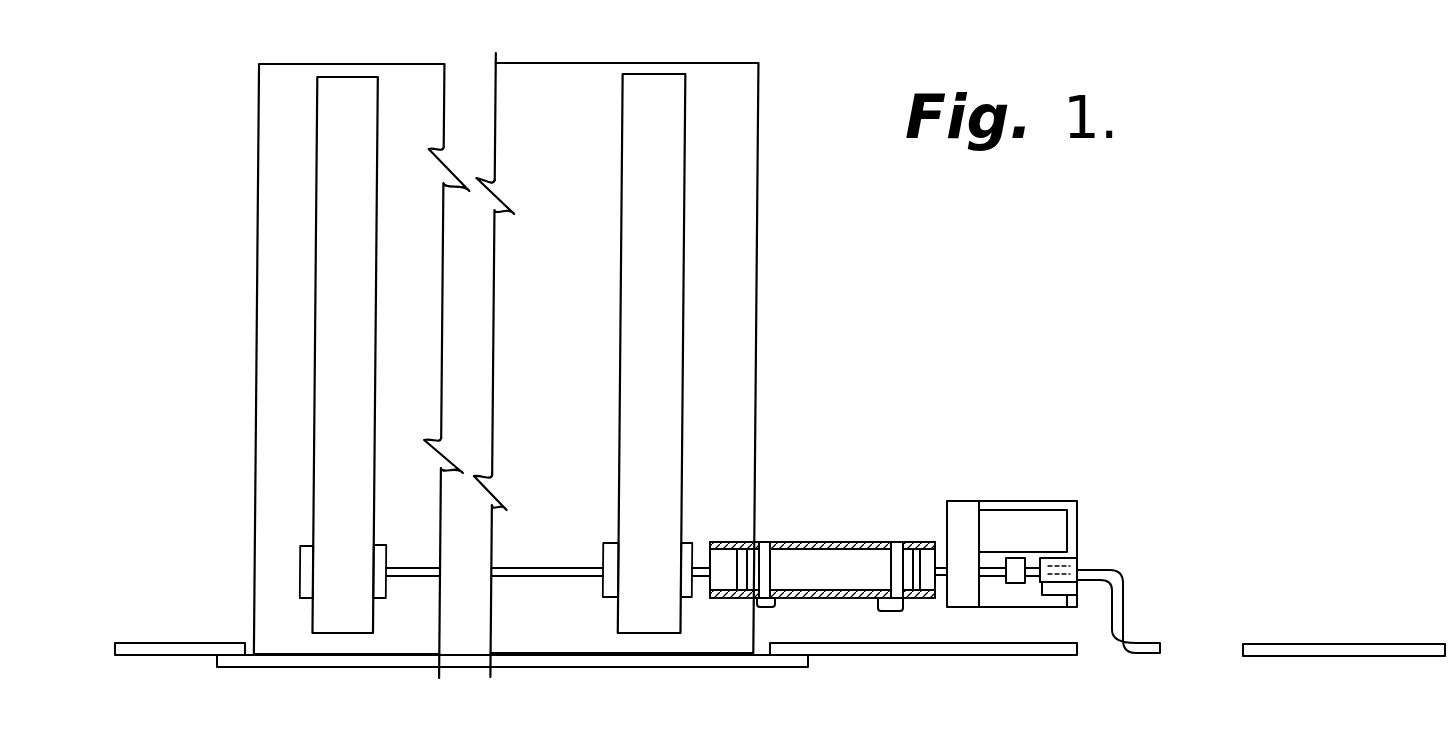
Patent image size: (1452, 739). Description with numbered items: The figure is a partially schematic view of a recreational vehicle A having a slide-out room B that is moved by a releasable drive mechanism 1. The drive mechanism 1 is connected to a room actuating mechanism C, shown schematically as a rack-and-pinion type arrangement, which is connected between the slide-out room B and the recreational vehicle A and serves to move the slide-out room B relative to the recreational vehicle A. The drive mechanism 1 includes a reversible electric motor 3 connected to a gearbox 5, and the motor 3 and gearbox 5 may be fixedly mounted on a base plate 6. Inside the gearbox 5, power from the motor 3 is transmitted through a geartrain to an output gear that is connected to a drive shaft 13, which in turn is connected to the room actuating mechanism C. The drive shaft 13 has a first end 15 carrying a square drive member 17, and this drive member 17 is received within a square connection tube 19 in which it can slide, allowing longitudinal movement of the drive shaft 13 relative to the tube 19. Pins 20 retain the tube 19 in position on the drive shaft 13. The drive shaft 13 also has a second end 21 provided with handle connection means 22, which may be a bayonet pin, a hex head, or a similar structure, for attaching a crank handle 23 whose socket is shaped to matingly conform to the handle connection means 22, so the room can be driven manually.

The drive mechanism 1 is at (1062, 534).
The reversible electric motor 3 is at (1067, 528).
The gearbox 5 is at (958, 501).
The base plate 6 is at (1080, 596).
The drive shaft 13 is at (993, 585).
The first end 15 is at (907, 562).
The square drive member 17 is at (916, 542).
The square connection tube 19 is at (819, 541).
The pins 20 is at (771, 607).
The second end 21 is at (1062, 572).
The handle connection means 22 is at (1056, 598).
The crank handle 23 is at (1127, 593).
The recreational vehicle A is at (1007, 657).
The slide-out room B is at (562, 667).
The room actuating mechanism C is at (310, 497).